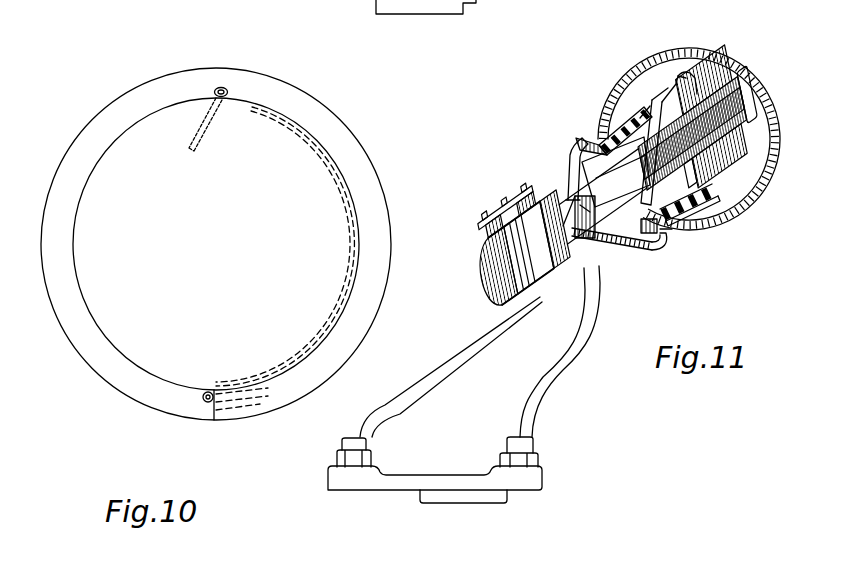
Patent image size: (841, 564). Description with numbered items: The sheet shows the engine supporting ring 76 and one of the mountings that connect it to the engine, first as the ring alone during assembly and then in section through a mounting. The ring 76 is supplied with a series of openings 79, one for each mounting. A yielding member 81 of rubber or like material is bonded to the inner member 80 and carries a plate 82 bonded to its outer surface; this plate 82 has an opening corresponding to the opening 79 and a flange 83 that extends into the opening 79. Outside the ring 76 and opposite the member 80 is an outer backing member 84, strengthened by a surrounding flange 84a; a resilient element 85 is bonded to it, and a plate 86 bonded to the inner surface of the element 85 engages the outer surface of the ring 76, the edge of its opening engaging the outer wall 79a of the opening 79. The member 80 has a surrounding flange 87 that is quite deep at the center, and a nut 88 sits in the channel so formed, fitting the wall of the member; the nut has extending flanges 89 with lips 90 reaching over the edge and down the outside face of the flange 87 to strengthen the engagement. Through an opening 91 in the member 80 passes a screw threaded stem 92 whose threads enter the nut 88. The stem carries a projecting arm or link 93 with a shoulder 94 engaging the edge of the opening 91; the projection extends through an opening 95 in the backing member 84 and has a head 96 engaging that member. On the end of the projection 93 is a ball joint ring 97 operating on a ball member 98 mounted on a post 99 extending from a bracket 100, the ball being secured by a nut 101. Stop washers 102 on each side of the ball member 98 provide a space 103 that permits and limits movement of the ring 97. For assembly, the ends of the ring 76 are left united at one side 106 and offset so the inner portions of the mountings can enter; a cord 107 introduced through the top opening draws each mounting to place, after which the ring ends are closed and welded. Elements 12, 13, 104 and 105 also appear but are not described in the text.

In FIG. 11, the hose 12 is at (655, 115).
In FIG. 11, the bolt 13 is at (740, 118).
In FIG. 11, the ring 76 is at (782, 132).
In FIG. 10, the opening 79 is at (217, 89).
In FIG. 11, the opening 79 is at (644, 229).
In FIG. 11, the outer wall of the opening 79a is at (670, 230).
In FIG. 11, the member 80 is at (643, 113).
In FIG. 11, the yielding member 81 is at (612, 157).
In FIG. 11, the plate 82 is at (617, 178).
In FIG. 11, the flange 83 is at (580, 197).
In FIG. 11, the outer backing member 84 is at (645, 252).
In FIG. 11, the surrounding flange 84a is at (666, 247).
In FIG. 11, the resilient element 85 is at (661, 244).
In FIG. 11, the plate 86 is at (672, 223).
In FIG. 11, the surrounding flange 87 is at (673, 90).
In FIG. 11, the nut 88 is at (703, 100).
In FIG. 11, the extending flanges 89 is at (690, 88).
In FIG. 11, the lips 90 is at (683, 83).
In FIG. 11, the opening 91 is at (606, 181).
In FIG. 11, the screw threaded projection or stem 92 is at (700, 208).
In FIG. 11, the projecting arm or link 93 is at (567, 193).
In FIG. 11, the shoulder 94 is at (677, 214).
In FIG. 11, the opening 95 is at (587, 210).
In FIG. 11, the head 96 is at (595, 240).
In FIG. 11, the ball joint ring 97 is at (476, 280).
In FIG. 11, the ball member 98 is at (480, 262).
In FIG. 11, the post 99 is at (483, 240).
In FIG. 11, the bracket 100 is at (501, 351).
In FIG. 11, the nut 101 is at (483, 257).
In FIG. 11, the stop washers 102 is at (482, 266).
In FIG. 11, the space 103 is at (483, 272).
In FIG. 11, the base plate 104 is at (403, 488).
In FIG. 11, the mounting nut 105 is at (338, 457).
In FIG. 10, the one side 106 is at (207, 404).
In FIG. 10, the cord 107 is at (198, 135).